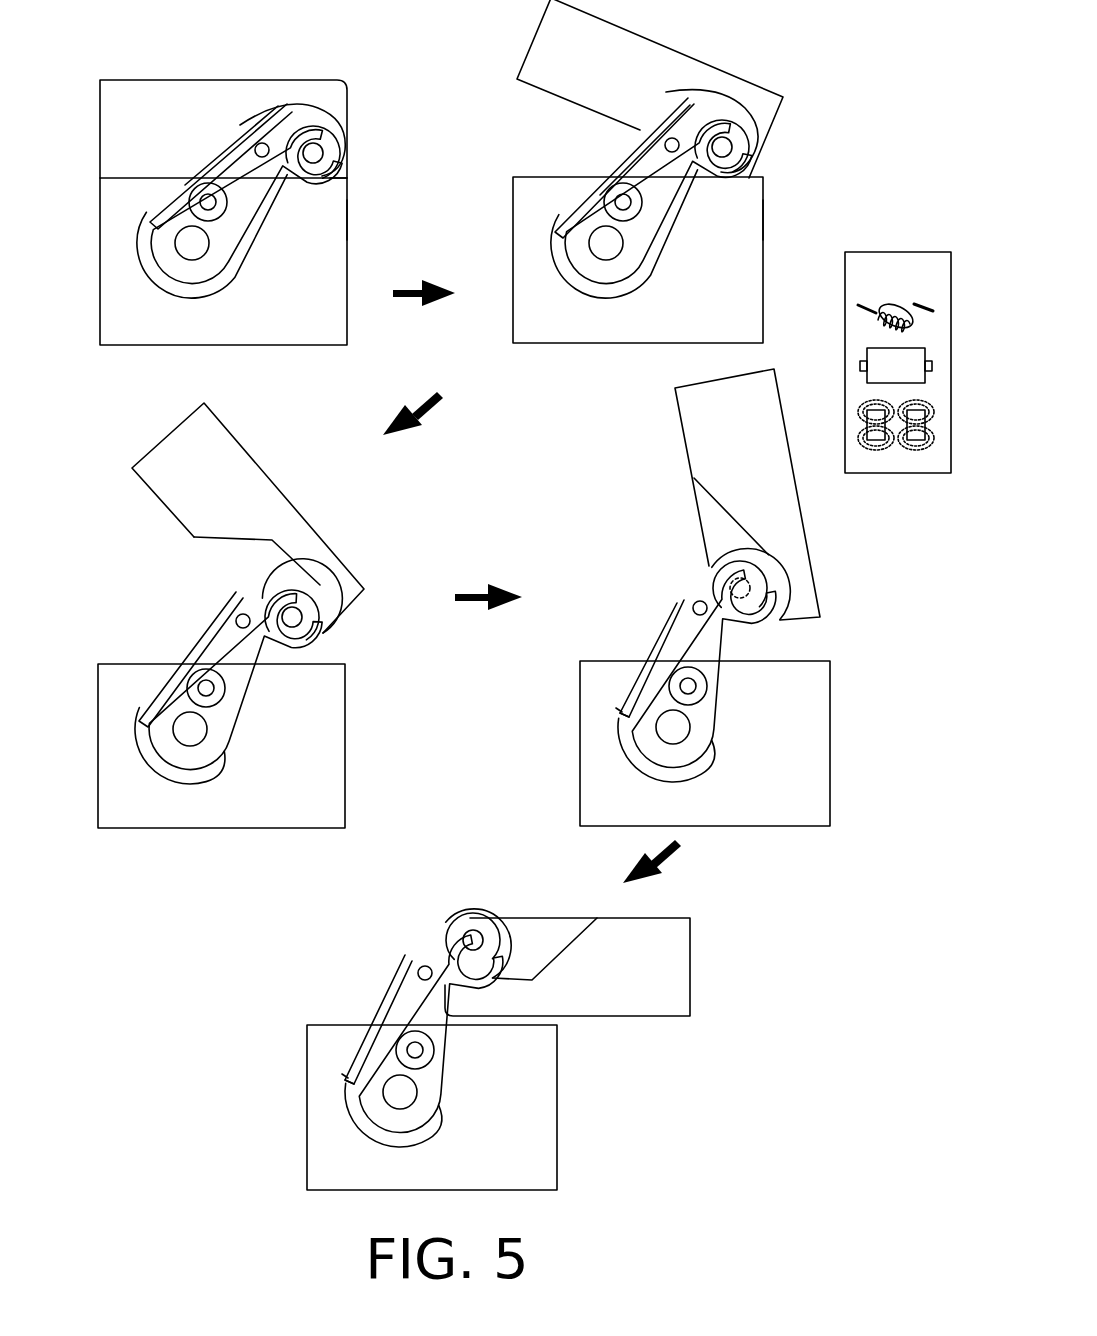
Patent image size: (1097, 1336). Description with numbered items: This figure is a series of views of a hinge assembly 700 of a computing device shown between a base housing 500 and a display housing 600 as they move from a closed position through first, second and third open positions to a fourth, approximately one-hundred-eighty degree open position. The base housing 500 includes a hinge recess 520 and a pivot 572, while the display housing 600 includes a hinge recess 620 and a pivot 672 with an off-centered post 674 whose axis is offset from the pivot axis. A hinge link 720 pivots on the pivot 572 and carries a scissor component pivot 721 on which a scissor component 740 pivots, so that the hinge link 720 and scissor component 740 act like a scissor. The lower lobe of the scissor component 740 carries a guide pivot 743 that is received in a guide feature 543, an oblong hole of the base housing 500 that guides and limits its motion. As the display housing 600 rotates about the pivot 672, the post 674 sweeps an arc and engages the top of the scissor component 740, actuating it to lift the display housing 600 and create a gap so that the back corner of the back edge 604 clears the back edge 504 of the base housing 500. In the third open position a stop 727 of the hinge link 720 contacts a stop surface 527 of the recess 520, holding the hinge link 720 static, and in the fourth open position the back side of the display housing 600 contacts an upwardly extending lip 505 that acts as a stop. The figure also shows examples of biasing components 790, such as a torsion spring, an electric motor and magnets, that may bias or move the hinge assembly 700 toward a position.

The base housing 500 is at (290, 314).
The back edge 504 is at (604, 212).
The lip 505 is at (388, 164).
The hinge recess 520 is at (417, 638).
The stop surface 527 is at (426, 907).
The guide feature 543 is at (503, 626).
The pivot 572 is at (411, 703).
The display housing 600 is at (110, 112).
The back edge 604 is at (551, 122).
The hinge recess 620 is at (464, 539).
The pivot 672 is at (549, 539).
The post 674 is at (449, 505).
The hinge assembly 700 is at (372, 55).
The hinge link 720 is at (469, 615).
The scissor component pivot 721 is at (436, 559).
The stop 727 is at (427, 926).
The scissor component 740 is at (397, 588).
The guide pivot 743 is at (370, 599).
The biasing components 790 is at (881, 290).